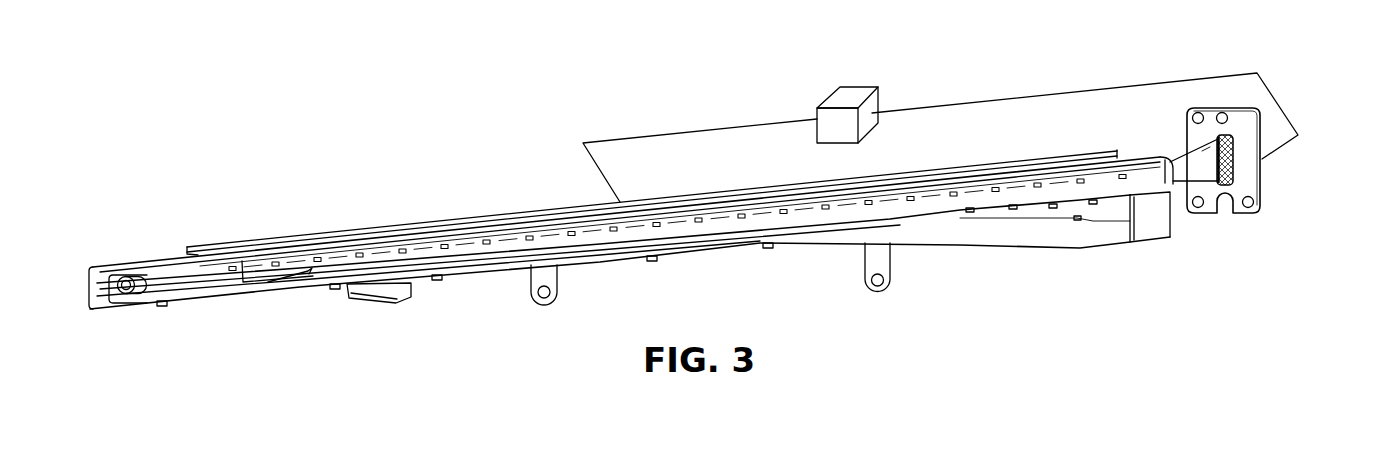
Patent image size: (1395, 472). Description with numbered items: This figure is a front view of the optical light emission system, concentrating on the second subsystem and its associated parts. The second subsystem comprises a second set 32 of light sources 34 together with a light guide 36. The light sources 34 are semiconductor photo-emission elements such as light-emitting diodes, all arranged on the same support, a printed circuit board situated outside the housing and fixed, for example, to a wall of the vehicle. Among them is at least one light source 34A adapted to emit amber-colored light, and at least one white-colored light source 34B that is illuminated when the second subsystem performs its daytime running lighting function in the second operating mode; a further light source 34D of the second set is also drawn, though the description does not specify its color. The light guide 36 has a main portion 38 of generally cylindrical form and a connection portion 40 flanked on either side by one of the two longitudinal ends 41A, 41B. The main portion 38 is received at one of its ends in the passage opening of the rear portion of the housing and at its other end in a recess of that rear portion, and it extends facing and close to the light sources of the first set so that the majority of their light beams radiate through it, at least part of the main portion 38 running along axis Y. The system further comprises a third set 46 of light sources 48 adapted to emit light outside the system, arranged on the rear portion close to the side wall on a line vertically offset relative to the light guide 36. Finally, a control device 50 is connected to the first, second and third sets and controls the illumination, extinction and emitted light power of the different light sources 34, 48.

The second set of light sources 32 is at (1251, 111).
The light sources 34 is at (1251, 111).
The amber-colored light source 34A is at (1251, 111).
The white-colored light source 34B is at (1288, 149).
The connector housing 34D is at (1288, 149).
The light guide 36 is at (1249, 184).
The main portion 38 is at (723, 232).
The connection portion 40 is at (1203, 167).
The longitudinal end 41A is at (1244, 167).
The longitudinal end 41B is at (126, 294).
The third set of light sources 46 is at (1047, 220).
The light sources 48 is at (1013, 209).
The control device 50 is at (837, 98).